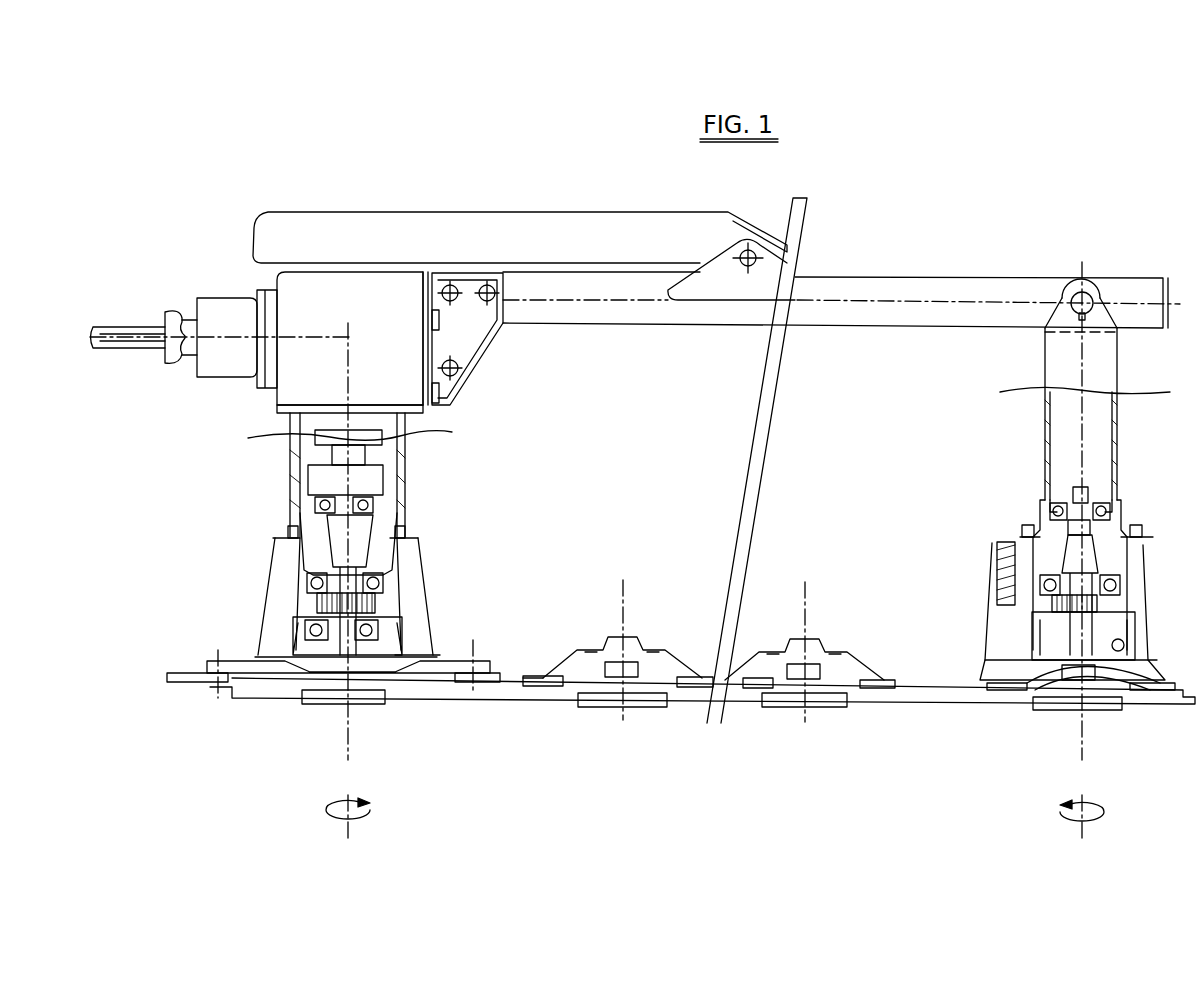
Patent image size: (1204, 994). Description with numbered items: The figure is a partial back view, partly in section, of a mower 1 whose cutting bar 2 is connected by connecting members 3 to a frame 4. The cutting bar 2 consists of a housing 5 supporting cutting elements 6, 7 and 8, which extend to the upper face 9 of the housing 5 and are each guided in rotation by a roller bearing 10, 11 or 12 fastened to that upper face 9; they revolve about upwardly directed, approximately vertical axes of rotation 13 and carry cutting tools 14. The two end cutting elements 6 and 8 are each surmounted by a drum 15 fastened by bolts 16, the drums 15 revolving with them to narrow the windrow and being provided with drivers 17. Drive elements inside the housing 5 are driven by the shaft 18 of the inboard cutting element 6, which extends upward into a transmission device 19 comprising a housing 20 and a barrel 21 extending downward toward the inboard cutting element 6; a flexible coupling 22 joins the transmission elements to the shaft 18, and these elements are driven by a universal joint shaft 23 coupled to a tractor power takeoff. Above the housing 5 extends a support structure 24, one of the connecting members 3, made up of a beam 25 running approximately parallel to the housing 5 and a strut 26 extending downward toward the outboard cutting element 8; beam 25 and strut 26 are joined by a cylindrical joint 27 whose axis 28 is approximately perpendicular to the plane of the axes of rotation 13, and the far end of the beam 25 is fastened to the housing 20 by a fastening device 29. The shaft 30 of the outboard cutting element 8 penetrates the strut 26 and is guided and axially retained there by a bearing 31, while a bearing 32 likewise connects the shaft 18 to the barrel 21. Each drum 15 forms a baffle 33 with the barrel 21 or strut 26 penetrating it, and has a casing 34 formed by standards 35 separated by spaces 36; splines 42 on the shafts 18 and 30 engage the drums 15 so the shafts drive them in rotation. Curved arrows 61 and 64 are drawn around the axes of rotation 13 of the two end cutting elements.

The mower 1 is at (711, 460).
The cutting bar 2 is at (527, 712).
The connecting members 3 is at (903, 270).
The frame 4 is at (458, 208).
The housing 5 is at (492, 700).
The inboard cutting element 6 is at (240, 665).
The cutting element 7 is at (673, 678).
The outboard cutting element 8 is at (1155, 676).
The upper face 9 is at (540, 678).
The roller bearing 10 is at (315, 645).
The roller bearing 11 is at (660, 690).
The roller bearing 12 is at (1047, 678).
The axes of rotation 13 is at (343, 777).
The cutting tools 14 is at (170, 680).
The drum 15 is at (408, 535).
The bolts 16 is at (405, 642).
The drivers 17 is at (372, 655).
The shaft 18 is at (340, 538).
The transmission device 19 is at (352, 338).
The housing 20 is at (284, 395).
The barrel 21 is at (292, 460).
The flexible coupling 22 is at (372, 475).
The universal joint shaft 23 is at (136, 326).
The support structure 24 is at (983, 277).
The beam 25 is at (600, 312).
The strut 26 is at (1110, 357).
The cylindrical joint 27 is at (1095, 288).
The axis 28 is at (1075, 305).
The fastening device 29 is at (460, 358).
The shaft 30 is at (1090, 487).
The bearing 31 is at (1100, 530).
The bearing 32 is at (373, 528).
The baffle 33 is at (290, 533).
The casing 34 is at (420, 570).
The standards 35 is at (283, 577).
The spaces 36 is at (310, 605).
The splines 42 is at (340, 630).
The direction of rotation 61 is at (326, 810).
The direction of rotation 64 is at (1104, 812).